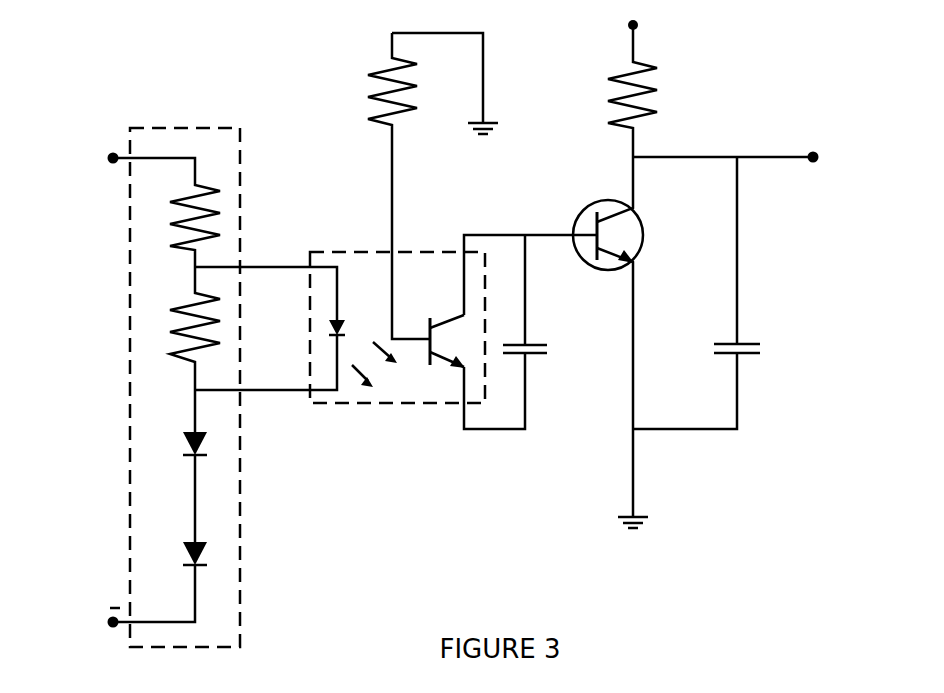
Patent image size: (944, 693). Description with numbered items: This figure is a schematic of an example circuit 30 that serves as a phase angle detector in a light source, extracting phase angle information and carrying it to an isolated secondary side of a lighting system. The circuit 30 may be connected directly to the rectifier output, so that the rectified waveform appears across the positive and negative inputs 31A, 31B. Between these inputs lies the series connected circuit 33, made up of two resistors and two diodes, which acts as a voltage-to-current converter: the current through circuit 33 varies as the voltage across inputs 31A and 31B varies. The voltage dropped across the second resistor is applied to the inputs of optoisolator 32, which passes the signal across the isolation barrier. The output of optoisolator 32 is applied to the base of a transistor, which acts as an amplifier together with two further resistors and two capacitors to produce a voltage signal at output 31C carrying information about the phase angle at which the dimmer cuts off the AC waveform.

The circuit 30 is at (160, 91).
The positive input 31A is at (112, 128).
The negative input 31B is at (114, 595).
The output 31C is at (810, 140).
The optoisolator 32 is at (398, 403).
The series connected circuit 33 is at (207, 128).